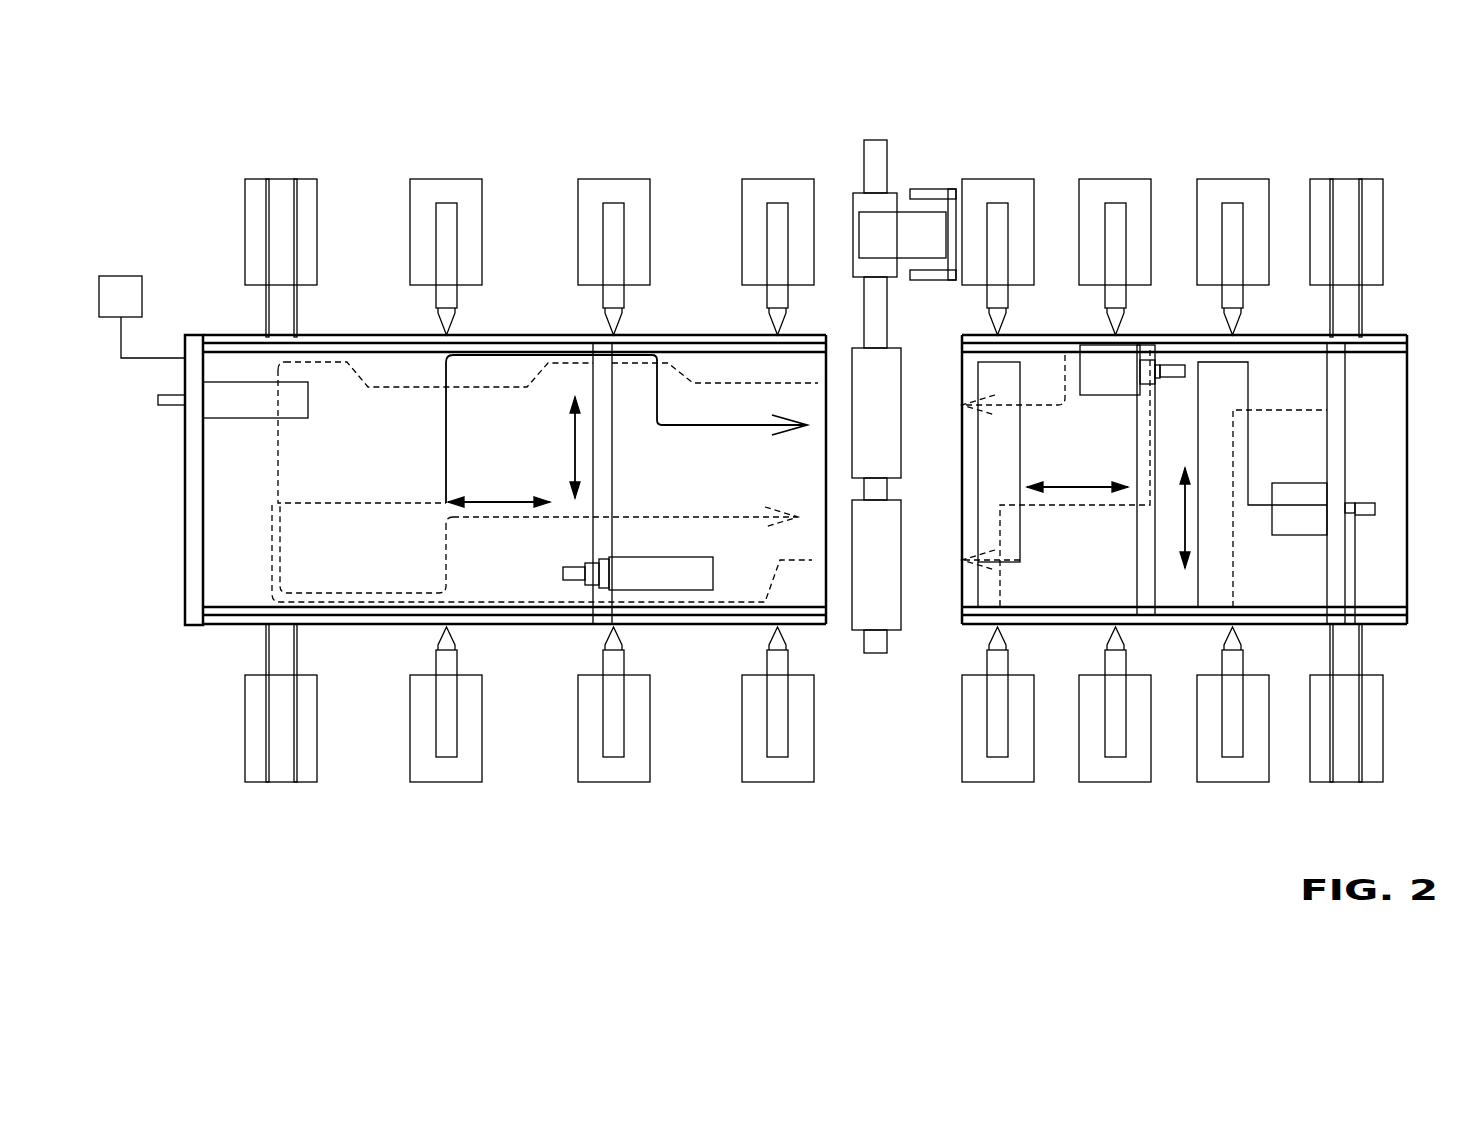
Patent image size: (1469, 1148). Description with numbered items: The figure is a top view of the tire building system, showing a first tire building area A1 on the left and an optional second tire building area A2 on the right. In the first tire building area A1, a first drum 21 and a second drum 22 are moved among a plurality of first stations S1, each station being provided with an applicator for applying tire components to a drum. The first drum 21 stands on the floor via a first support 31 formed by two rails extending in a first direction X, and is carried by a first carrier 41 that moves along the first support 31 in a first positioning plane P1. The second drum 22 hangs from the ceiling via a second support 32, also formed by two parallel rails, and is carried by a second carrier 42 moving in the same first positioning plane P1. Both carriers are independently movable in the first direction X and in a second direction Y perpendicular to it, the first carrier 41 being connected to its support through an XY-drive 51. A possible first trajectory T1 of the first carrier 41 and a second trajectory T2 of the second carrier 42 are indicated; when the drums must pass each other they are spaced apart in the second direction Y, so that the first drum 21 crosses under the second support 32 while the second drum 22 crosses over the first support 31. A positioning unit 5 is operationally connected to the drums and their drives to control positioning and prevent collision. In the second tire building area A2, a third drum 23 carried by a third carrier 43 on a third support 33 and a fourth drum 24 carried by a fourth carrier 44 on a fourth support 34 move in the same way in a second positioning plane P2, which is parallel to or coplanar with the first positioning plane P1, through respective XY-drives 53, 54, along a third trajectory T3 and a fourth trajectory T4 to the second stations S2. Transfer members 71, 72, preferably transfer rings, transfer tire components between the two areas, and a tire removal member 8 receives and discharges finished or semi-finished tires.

The positioning unit 5 is at (142, 317).
The tire removal member 8 is at (890, 205).
The first drum 21 is at (700, 582).
The second drum 22 is at (232, 405).
The third drum 23 is at (1295, 520).
The fourth drum 24 is at (1105, 385).
The first support 31 is at (357, 378).
The second support 32 is at (355, 350).
The third support 33 is at (1117, 607).
The fourth support 34 is at (1170, 338).
The first carrier 41 is at (570, 585).
The second carrier 42 is at (167, 403).
The third carrier 43 is at (1375, 510).
The fourth carrier 44 is at (1178, 378).
The XY-drive 51 is at (190, 512).
The XY-drive 53 is at (1337, 532).
The XY-drive 54 is at (1145, 520).
The transfer member 71 is at (892, 577).
The transfer member 72 is at (892, 421).
The first stations S1 is at (412, 186).
The second stations S2 is at (1095, 179).
The first positioning plane P1 is at (243, 548).
The second positioning plane P2 is at (1383, 413).
The first trajectory T1 is at (739, 445).
The second trajectory T2 is at (741, 489).
The third trajectory T3 is at (1026, 587).
The fourth trajectory T4 is at (999, 484).
The first direction X is at (788, 483).
The second direction Y is at (869, 482).
The first tire building area A1 is at (150, 724).
The second tire building area A2 is at (1462, 724).